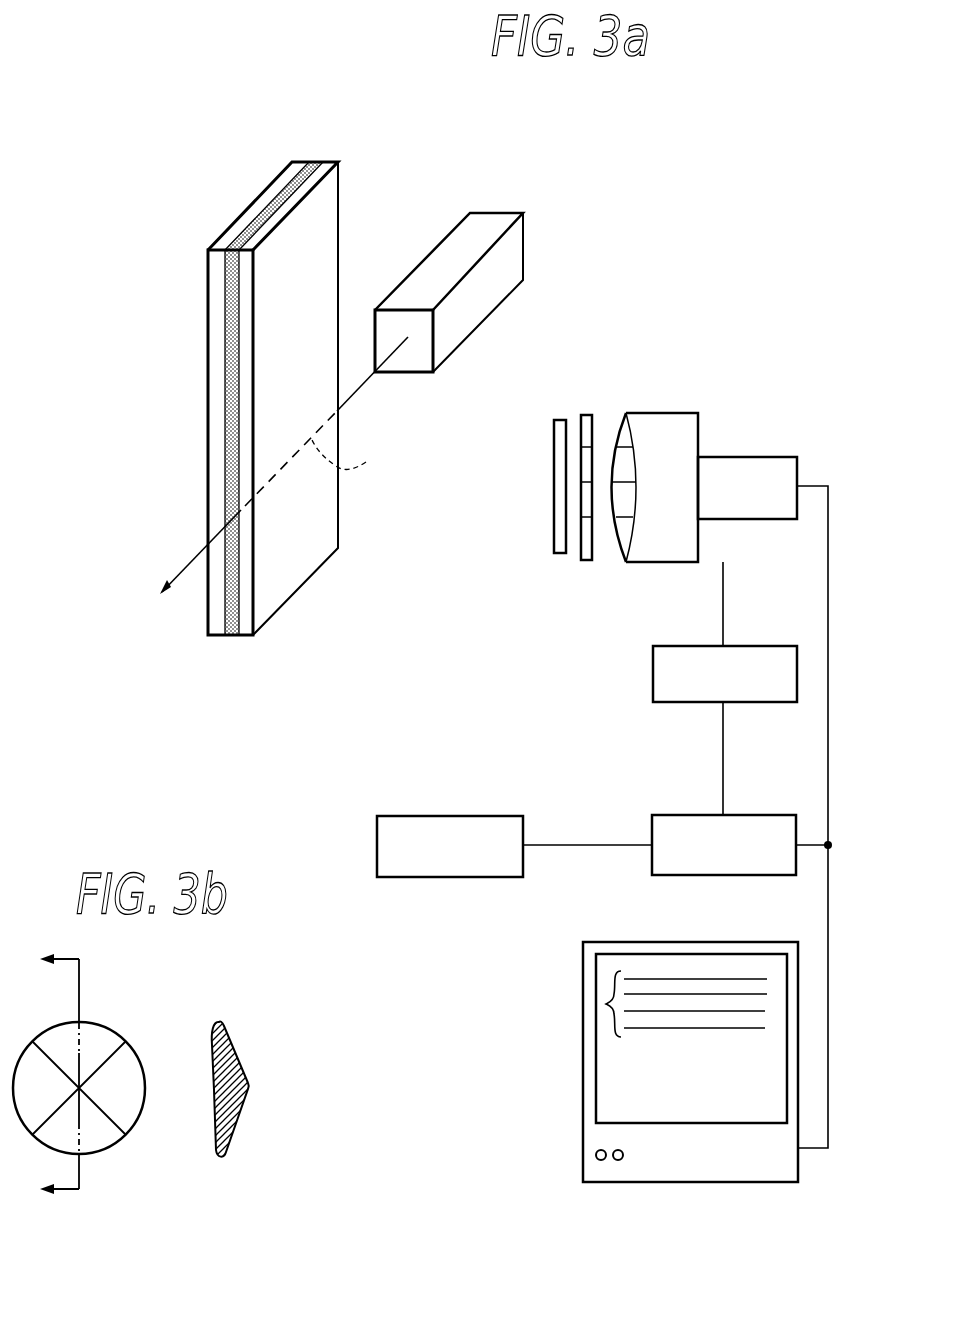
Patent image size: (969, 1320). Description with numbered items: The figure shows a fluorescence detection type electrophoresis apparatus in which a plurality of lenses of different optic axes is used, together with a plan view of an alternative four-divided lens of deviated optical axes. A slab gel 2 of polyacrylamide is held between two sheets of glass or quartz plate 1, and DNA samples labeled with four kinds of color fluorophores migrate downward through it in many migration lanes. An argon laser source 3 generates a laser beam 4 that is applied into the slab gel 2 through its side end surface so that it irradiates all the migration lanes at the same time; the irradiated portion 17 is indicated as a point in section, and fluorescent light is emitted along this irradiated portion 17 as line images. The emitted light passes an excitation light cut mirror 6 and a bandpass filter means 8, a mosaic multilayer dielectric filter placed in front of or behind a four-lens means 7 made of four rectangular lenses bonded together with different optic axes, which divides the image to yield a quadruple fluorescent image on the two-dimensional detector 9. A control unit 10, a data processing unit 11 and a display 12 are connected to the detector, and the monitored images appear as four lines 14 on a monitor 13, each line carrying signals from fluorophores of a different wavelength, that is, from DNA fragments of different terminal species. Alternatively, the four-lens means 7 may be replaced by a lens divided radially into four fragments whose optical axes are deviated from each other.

The glass plate 1 is at (337, 162).
The slab gel 2 is at (316, 162).
The argon laser source 3 is at (500, 222).
The laser beam 4 is at (362, 386).
The excitation light cut mirror 6 is at (562, 420).
The four-lens means 7 is at (627, 426).
The bandpass filter means 8 is at (588, 418).
The two-dimensional detector 9 is at (776, 473).
The control unit 10 is at (777, 661).
The data processing unit 11 is at (777, 832).
The display 12 is at (502, 831).
The monitor 13 is at (606, 1079).
The lines 14 is at (603, 1002).
The irradiated portion 17 is at (349, 462).